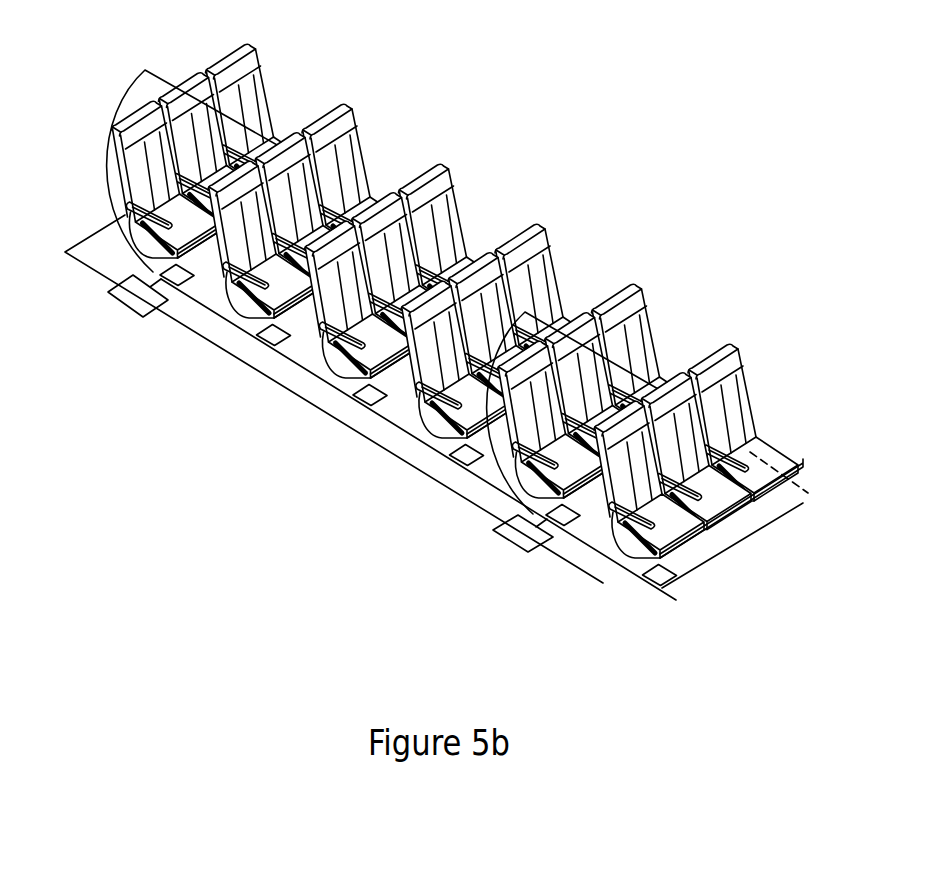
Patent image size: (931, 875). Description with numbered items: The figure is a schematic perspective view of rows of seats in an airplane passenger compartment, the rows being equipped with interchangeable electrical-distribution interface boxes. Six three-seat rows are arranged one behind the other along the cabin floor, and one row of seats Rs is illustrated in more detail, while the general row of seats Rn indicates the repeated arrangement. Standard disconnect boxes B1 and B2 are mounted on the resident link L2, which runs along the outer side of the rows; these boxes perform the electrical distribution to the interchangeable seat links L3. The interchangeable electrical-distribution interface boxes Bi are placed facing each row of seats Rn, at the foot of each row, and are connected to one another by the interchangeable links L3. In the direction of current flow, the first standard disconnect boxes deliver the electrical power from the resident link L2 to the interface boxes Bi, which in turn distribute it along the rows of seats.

The row of seats Rn is at (287, 72).
The row of seats Rs is at (620, 218).
The standard disconnect box B1 is at (121, 304).
The standard disconnect box B2 is at (510, 536).
The interchangeable electrical-distribution interface box Bi is at (449, 455).
The resident link L2 is at (288, 390).
The interchangeable seat link L3 is at (226, 322).